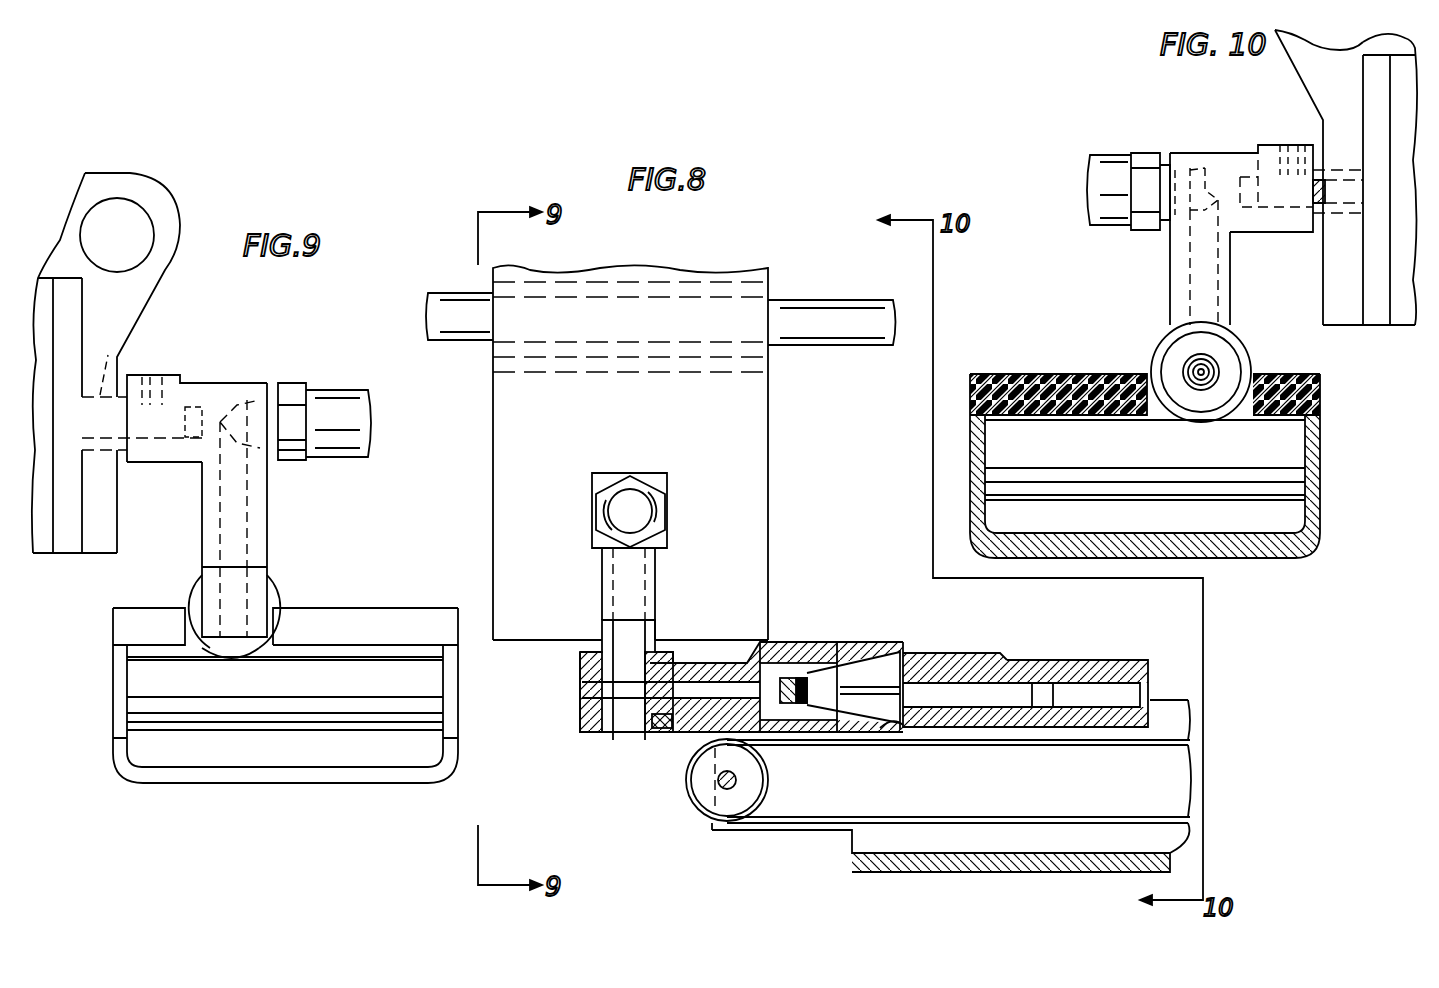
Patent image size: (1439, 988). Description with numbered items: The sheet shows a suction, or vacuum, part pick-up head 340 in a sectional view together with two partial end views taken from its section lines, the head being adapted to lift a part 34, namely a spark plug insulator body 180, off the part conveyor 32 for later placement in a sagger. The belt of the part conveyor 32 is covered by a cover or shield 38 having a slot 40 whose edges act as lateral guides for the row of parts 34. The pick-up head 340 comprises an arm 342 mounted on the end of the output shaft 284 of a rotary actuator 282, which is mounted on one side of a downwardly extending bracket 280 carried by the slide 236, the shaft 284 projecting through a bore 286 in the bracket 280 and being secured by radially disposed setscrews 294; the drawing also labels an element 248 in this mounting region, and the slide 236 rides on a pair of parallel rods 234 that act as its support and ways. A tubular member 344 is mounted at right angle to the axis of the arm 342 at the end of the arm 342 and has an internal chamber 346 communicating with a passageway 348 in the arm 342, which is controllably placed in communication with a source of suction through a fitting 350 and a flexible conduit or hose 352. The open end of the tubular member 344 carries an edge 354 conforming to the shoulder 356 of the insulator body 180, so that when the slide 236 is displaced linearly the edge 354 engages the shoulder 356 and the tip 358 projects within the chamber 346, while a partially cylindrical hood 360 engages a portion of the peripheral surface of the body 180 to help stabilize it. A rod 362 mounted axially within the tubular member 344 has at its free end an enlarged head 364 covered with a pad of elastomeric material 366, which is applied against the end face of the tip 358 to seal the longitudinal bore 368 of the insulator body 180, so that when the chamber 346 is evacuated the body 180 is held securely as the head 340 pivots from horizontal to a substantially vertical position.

In FIG. 8, the part conveyor 32 is at (812, 822).
In FIG. 9, the part conveyor 32 is at (112, 762).
In FIG. 10, the part conveyor 32 is at (1318, 541).
In FIG. 8, the part 34 is at (1005, 660).
In FIG. 9, the part 34 is at (280, 630).
In FIG. 10, the part 34 is at (1170, 405).
In FIG. 8, the cover or shield 38 is at (1162, 698).
In FIG. 9, the cover or shield 38 is at (390, 618).
In FIG. 10, the cover or shield 38 is at (1320, 405).
In FIG. 8, the slot 40 is at (1180, 725).
In FIG. 9, the slot 40 is at (270, 650).
In FIG. 10, the slot 40 is at (1240, 420).
In FIG. 8, the spark plug insulator body 180 is at (1073, 660).
In FIG. 9, the spark plug insulator body 180 is at (226, 652).
In FIG. 10, the spark plug insulator body 180 is at (1218, 397).
In FIG. 8, the rods 234 is at (802, 348).
In FIG. 8, the slide 236 is at (770, 272).
In FIG. 9, the slide 236 is at (150, 300).
In FIG. 10, the slide 236 is at (1305, 62).
In FIG. 10, the threaded bore 248 is at (1290, 158).
In FIG. 8, the bracket 280 is at (758, 493).
In FIG. 9, the bracket 280 is at (100, 555).
In FIG. 10, the bracket 280 is at (1345, 327).
In FIG. 9, the rotary actuator 282 is at (42, 568).
In FIG. 10, the rotary actuator 282 is at (1395, 332).
In FIG. 9, the output shaft 284 is at (125, 375).
In FIG. 10, the output shaft 284 is at (1282, 234).
In FIG. 9, the bore 286 is at (105, 361).
In FIG. 9, the setscrews 294 is at (180, 383).
In FIG. 8, the part pick-up head 340 is at (598, 740).
In FIG. 9, the part pick-up head 340 is at (275, 556).
In FIG. 10, the part pick-up head 340 is at (1158, 272).
In FIG. 8, the arm 342 is at (657, 584).
In FIG. 9, the arm 342 is at (267, 495).
In FIG. 10, the arm 342 is at (1168, 312).
In FIG. 8, the tubular member 344 is at (882, 652).
In FIG. 9, the tubular member 344 is at (282, 600).
In FIG. 10, the tubular member 344 is at (1255, 366).
In FIG. 8, the internal chamber 346 is at (783, 664).
In FIG. 8, the passageway 348 is at (634, 637).
In FIG. 9, the passageway 348 is at (250, 536).
In FIG. 10, the passageway 348 is at (1212, 312).
In FIG. 8, the fitting 350 is at (668, 502).
In FIG. 9, the fitting 350 is at (293, 388).
In FIG. 10, the fitting 350 is at (1142, 160).
In FIG. 9, the flexible conduit or hose 352 is at (330, 400).
In FIG. 10, the flexible conduit or hose 352 is at (1118, 150).
In FIG. 8, the edge 354 is at (905, 732).
In FIG. 8, the shoulder 356 is at (898, 722).
In FIG. 8, the tip 358 is at (835, 706).
In FIG. 8, the partially cylindrical hood 360 is at (955, 642).
In FIG. 9, the partially cylindrical hood 360 is at (182, 598).
In FIG. 10, the partially cylindrical hood 360 is at (1152, 357).
In FIG. 8, the rod 362 is at (580, 690).
In FIG. 8, the enlarged head 364 is at (790, 705).
In FIG. 8, the elastomeric pad 366 is at (808, 678).
In FIG. 8, the longitudinal bore 368 is at (1015, 697).